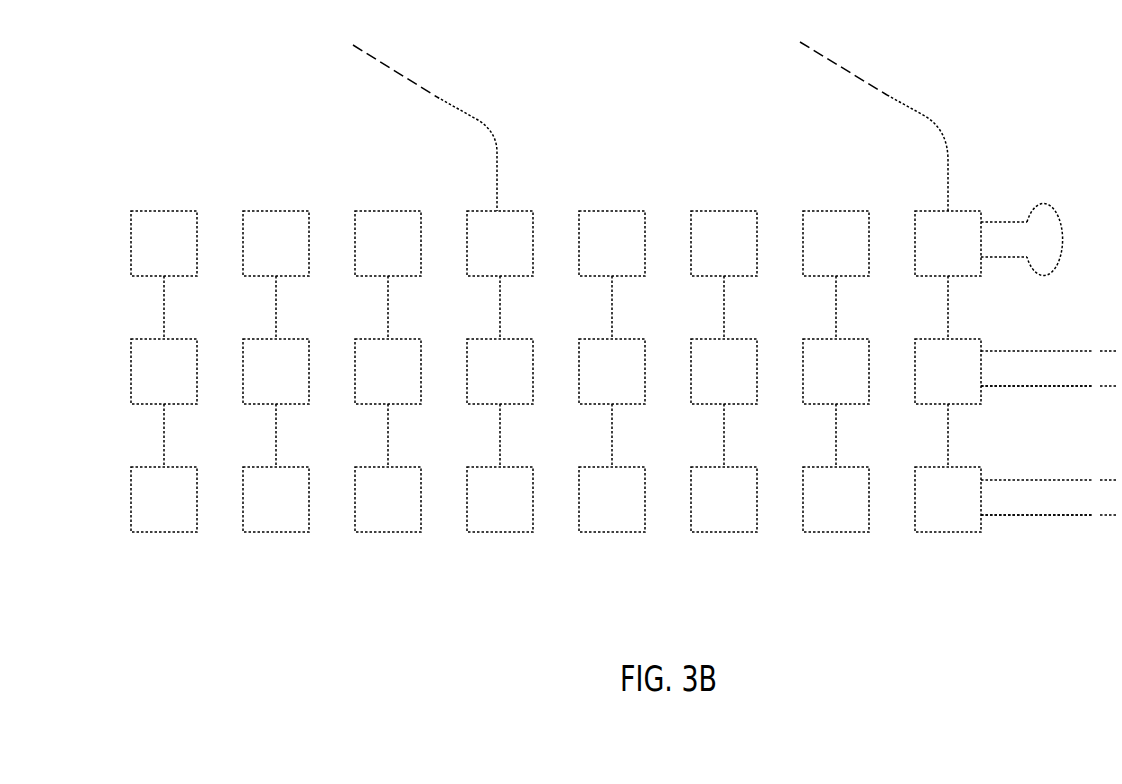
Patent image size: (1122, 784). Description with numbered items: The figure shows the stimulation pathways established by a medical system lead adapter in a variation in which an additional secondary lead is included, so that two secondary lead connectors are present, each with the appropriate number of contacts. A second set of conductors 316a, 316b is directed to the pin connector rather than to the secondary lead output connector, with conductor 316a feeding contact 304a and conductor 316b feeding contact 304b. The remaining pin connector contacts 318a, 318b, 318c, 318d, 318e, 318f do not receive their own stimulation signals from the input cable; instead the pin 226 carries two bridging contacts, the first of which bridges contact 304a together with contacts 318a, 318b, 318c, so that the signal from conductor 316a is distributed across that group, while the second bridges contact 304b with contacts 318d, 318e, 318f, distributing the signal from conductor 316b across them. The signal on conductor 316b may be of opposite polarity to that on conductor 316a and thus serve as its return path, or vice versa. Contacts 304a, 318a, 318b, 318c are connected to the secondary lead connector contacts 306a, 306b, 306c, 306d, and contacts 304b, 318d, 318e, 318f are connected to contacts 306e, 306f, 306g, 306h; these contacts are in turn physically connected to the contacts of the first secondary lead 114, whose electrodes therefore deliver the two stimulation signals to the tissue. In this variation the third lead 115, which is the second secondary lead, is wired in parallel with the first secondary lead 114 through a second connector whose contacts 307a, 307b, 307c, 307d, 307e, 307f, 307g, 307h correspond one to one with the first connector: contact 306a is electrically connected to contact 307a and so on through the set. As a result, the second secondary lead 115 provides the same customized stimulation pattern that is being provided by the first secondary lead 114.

The pin connector contact 318f is at (184, 211).
The pin connector contact 318e is at (296, 211).
The pin connector contact 318d is at (408, 211).
The pin connector contact 318c is at (632, 211).
The pin connector contact 318b is at (744, 211).
The pin connector contact 318a is at (856, 211).
The pin connector contact 304b is at (520, 211).
The pin connector contact 304a is at (968, 211).
The secondary lead connector contact 306h is at (184, 339).
The secondary lead connector contact 306g is at (296, 339).
The secondary lead connector contact 306f is at (408, 339).
The secondary lead connector contact 306e is at (520, 339).
The secondary lead connector contact 306d is at (632, 339).
The secondary lead connector contact 306c is at (744, 339).
The secondary lead connector contact 306b is at (856, 339).
The secondary lead connector contact 306a is at (968, 339).
The second secondary lead connector contact 307h is at (184, 467).
The second secondary lead connector contact 307g is at (296, 467).
The second secondary lead connector contact 307f is at (408, 467).
The second secondary lead connector contact 307e is at (520, 467).
The second secondary lead connector contact 307d is at (632, 467).
The second secondary lead connector contact 307c is at (744, 467).
The second secondary lead connector contact 307b is at (856, 467).
The second secondary lead connector contact 307a is at (968, 467).
The conductor 316a is at (929, 119).
The conductor 316b is at (498, 139).
The pin 226 is at (1043, 204).
The secondary lead 114 is at (1021, 392).
The third lead 115 is at (1012, 518).